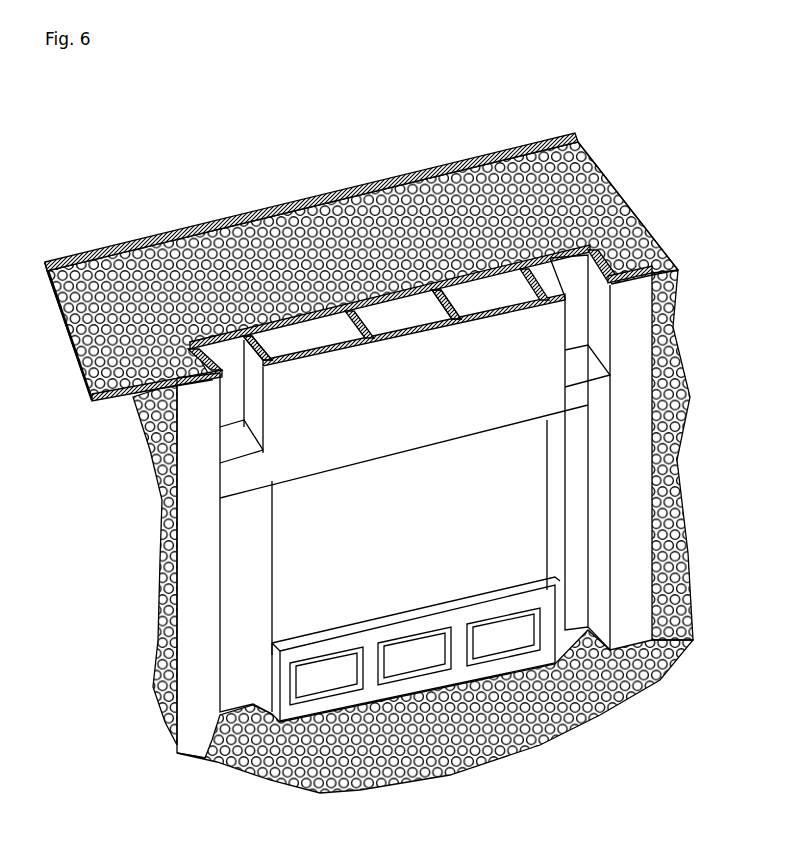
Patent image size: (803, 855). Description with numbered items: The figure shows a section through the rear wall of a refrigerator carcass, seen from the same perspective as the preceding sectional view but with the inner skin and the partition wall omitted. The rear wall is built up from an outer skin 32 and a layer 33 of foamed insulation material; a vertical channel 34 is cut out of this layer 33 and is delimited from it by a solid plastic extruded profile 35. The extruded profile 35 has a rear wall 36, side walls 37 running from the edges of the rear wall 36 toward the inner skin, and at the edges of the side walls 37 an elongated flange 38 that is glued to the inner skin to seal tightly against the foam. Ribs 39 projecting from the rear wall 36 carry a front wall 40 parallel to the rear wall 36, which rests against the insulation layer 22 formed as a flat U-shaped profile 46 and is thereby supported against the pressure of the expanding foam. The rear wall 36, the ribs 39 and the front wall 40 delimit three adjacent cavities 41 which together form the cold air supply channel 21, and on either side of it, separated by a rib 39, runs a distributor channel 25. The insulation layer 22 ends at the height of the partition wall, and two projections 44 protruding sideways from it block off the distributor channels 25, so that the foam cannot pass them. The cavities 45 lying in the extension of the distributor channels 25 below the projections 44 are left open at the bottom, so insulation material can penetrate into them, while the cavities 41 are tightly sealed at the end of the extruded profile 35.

The cold air supply channel 21 is at (338, 323).
The insulation layer 22 is at (393, 506).
The distributor channel 25 is at (356, 284).
The outer skin 32 is at (225, 225).
The layer of foamed insulation material 33 is at (110, 283).
The vertical channel 34 is at (408, 303).
The extruded profile 35 is at (302, 255).
The rear wall 36 is at (467, 313).
The side walls 37 is at (160, 355).
The elongated flange 38 is at (140, 382).
The ribs 39 is at (535, 262).
The front wall 40 is at (483, 307).
The cavities 41 is at (344, 300).
The projections 44 is at (235, 472).
The cavities 45 is at (233, 600).
The flat U-shaped profile 46 is at (437, 387).